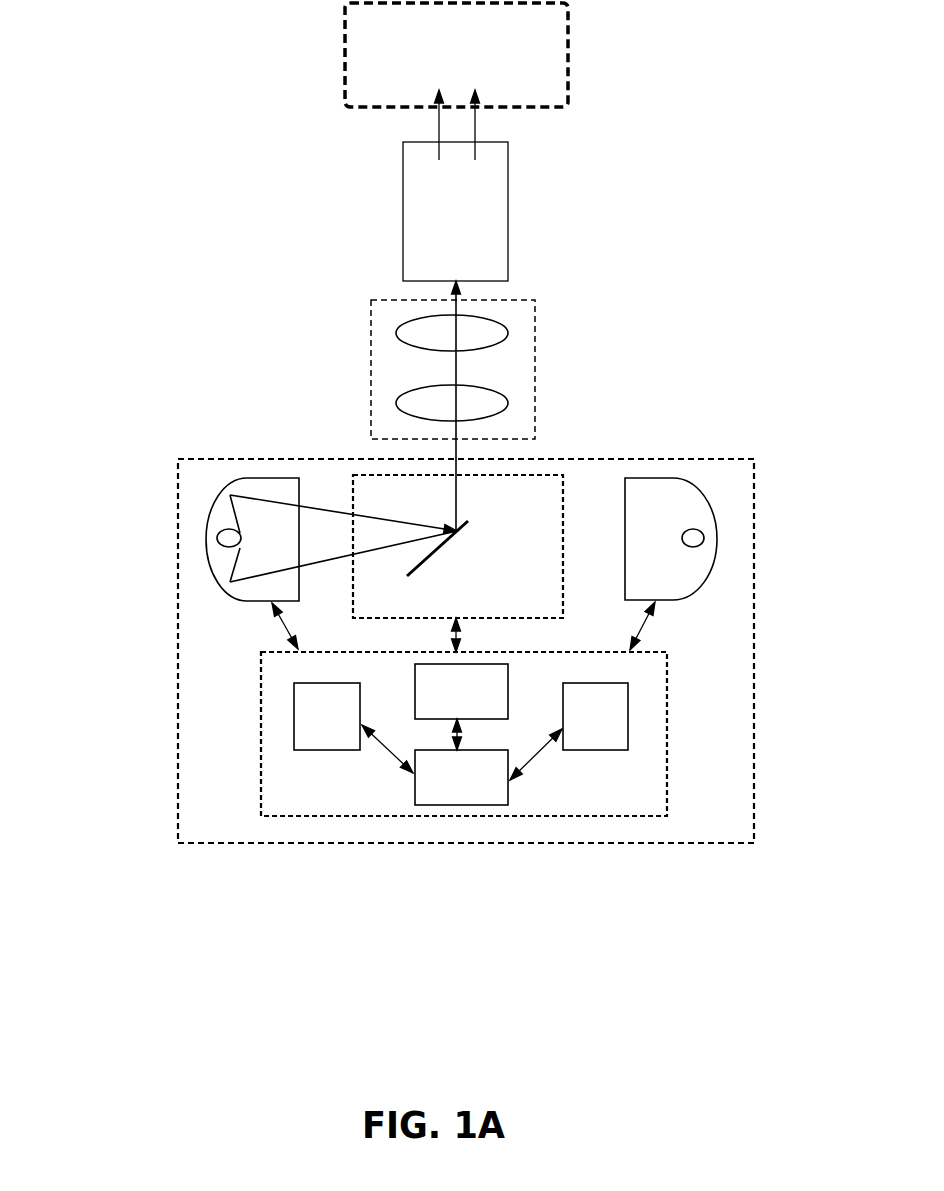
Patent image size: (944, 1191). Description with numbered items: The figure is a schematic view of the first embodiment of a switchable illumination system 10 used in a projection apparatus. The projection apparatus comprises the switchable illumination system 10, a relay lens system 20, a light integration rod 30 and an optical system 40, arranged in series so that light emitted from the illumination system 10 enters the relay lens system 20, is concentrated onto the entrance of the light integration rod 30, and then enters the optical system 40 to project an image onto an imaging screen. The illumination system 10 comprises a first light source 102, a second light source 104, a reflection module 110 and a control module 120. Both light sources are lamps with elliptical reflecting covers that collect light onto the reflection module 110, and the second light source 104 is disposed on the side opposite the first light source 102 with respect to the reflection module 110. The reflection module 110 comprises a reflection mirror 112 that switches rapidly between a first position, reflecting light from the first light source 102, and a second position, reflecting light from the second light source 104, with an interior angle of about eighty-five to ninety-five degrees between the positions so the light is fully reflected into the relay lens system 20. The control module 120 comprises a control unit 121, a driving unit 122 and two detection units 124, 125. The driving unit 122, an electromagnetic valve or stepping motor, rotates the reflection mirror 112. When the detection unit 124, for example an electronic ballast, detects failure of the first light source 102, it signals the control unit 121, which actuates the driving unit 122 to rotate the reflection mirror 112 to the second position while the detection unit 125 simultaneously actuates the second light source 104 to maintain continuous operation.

The switchable illumination system 10 is at (177, 484).
The relay lens system 20 is at (370, 348).
The light integration rod 30 is at (402, 190).
The optical system 40 is at (343, 53).
The first light source 102 is at (212, 564).
The second light source 104 is at (715, 560).
The reflection module 110 is at (352, 497).
The reflection mirror 112 is at (453, 536).
The control module 120 is at (260, 686).
The control unit 121 is at (453, 798).
The driving unit 122 is at (502, 673).
The detection unit 124 is at (296, 732).
The detection unit 125 is at (617, 716).